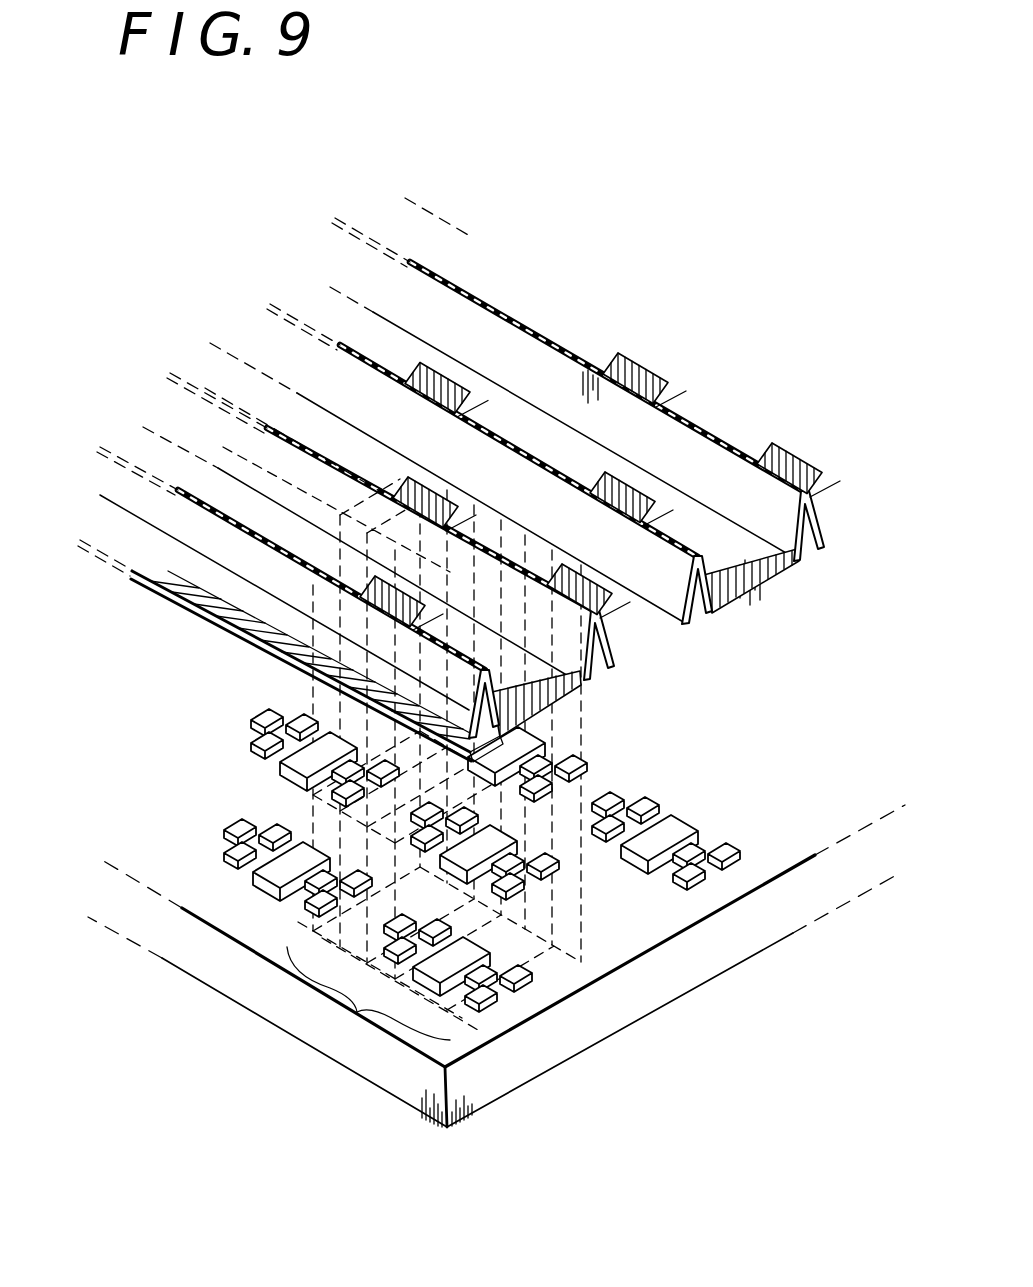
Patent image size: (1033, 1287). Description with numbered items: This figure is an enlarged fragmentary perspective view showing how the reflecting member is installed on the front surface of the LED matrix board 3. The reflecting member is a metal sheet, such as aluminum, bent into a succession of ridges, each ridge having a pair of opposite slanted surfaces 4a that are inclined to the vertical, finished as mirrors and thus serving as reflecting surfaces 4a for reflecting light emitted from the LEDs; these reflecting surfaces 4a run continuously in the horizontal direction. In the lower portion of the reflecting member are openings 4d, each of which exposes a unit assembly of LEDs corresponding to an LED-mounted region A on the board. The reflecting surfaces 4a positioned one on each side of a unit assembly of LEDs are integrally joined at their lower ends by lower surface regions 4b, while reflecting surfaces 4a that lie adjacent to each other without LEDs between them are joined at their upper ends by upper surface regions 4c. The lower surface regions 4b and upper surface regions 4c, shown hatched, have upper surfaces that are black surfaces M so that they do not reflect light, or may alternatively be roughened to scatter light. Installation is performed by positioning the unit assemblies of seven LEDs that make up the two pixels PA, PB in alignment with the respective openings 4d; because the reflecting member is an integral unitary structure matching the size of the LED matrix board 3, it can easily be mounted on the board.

The LED matrix board 3 is at (705, 960).
The LED-mounted region A is at (357, 1012).
The pixel PA is at (403, 1016).
The pixel PB is at (322, 977).
The black surfaces M is at (430, 284).
The reflecting surfaces 4a is at (770, 550).
The lower surface regions 4b is at (447, 372).
The upper surface regions 4c is at (823, 513).
The openings 4d is at (593, 592).